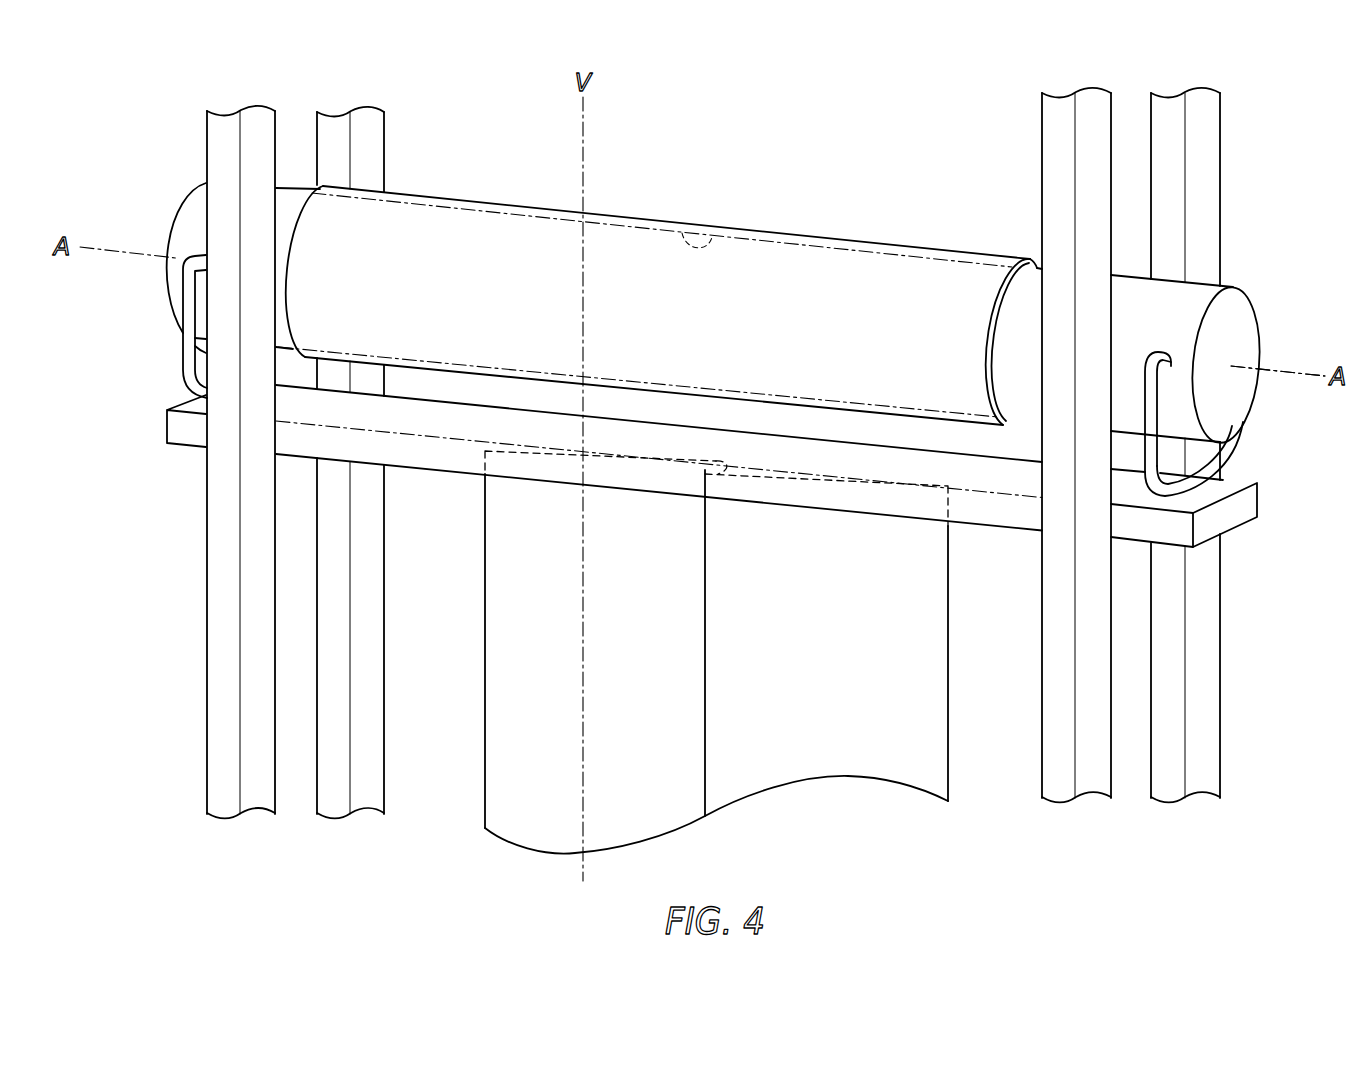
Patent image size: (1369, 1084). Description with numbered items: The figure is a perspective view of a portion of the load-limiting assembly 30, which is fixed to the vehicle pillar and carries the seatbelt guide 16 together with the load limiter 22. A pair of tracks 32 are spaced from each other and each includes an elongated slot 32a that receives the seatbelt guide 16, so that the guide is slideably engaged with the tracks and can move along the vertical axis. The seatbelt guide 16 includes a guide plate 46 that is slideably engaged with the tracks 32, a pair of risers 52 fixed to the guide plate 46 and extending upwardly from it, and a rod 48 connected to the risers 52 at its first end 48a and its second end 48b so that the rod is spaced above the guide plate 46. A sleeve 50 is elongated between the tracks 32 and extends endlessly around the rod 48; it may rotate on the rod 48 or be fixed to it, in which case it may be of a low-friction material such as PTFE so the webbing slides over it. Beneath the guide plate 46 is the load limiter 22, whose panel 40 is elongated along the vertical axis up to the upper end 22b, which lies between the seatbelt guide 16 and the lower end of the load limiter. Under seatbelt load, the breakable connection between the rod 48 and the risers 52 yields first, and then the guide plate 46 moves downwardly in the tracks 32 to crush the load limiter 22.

The seatbelt guide 16 is at (1288, 337).
The load limiter 22 is at (898, 697).
The upper end 22b is at (872, 540).
The load-limiting assembly 30 is at (652, 125).
The track 32 is at (388, 148).
The elongated slot 32a is at (302, 607).
The panel 40 is at (815, 750).
The guide plate 46 is at (1238, 528).
The rod 48 is at (704, 240).
The first end 48a is at (1232, 320).
The second end 48b is at (170, 215).
The sleeve 50 is at (848, 240).
The risers 52 is at (183, 352).